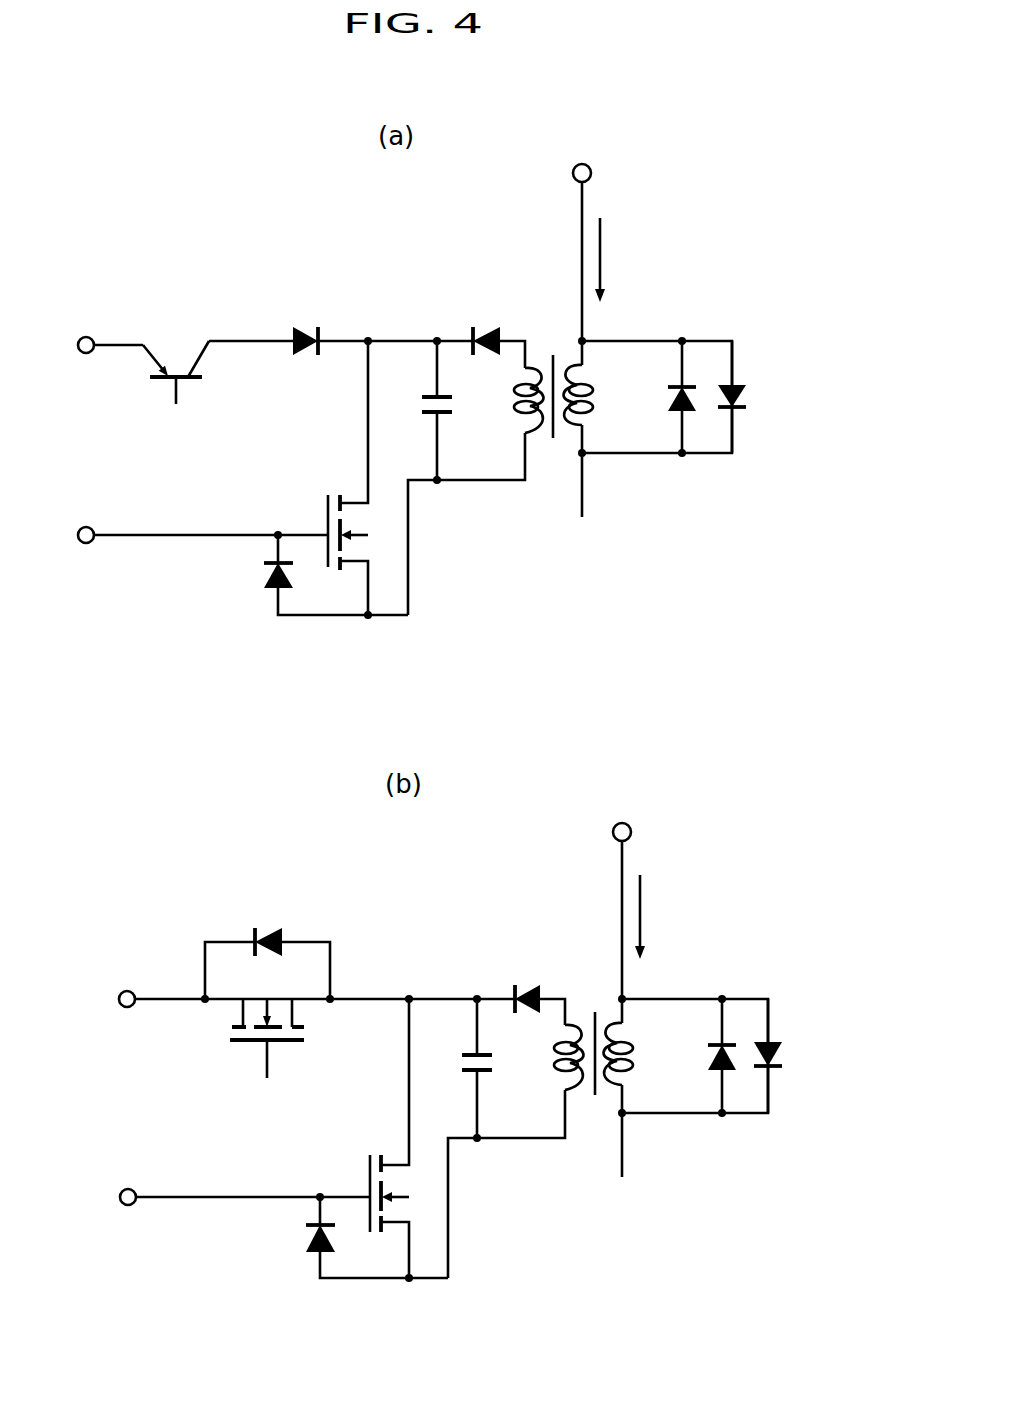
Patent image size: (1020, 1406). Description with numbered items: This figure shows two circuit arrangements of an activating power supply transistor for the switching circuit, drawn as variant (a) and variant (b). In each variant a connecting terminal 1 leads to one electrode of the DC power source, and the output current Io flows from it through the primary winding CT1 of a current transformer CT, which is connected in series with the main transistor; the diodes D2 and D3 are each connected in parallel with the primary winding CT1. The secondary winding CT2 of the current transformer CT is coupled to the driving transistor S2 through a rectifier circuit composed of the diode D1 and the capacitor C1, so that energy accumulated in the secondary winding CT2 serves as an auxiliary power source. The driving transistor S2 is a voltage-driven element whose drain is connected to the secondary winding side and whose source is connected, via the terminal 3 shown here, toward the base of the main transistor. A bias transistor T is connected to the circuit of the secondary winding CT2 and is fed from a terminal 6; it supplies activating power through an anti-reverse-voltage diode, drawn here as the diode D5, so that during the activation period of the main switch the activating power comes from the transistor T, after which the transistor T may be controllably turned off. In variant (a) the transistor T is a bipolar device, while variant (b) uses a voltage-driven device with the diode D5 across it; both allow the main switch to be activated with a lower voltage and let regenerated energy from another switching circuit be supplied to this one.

The connecting terminal 1 is at (591, 173).
The control terminal 3 is at (86, 527).
The input terminal 6 is at (86, 337).
The bias transistor T is at (197, 381).
The diode D5 is at (306, 328).
The diode D1 is at (488, 328).
The capacitor C1 is at (432, 415).
The current transformer CT is at (561, 340).
The primary winding CT1 is at (588, 383).
The secondary winding CT2 is at (520, 391).
The diode D2 is at (667, 401).
The diode D3 is at (737, 397).
The driving transistor S2 is at (327, 510).
The output current Io is at (633, 588).